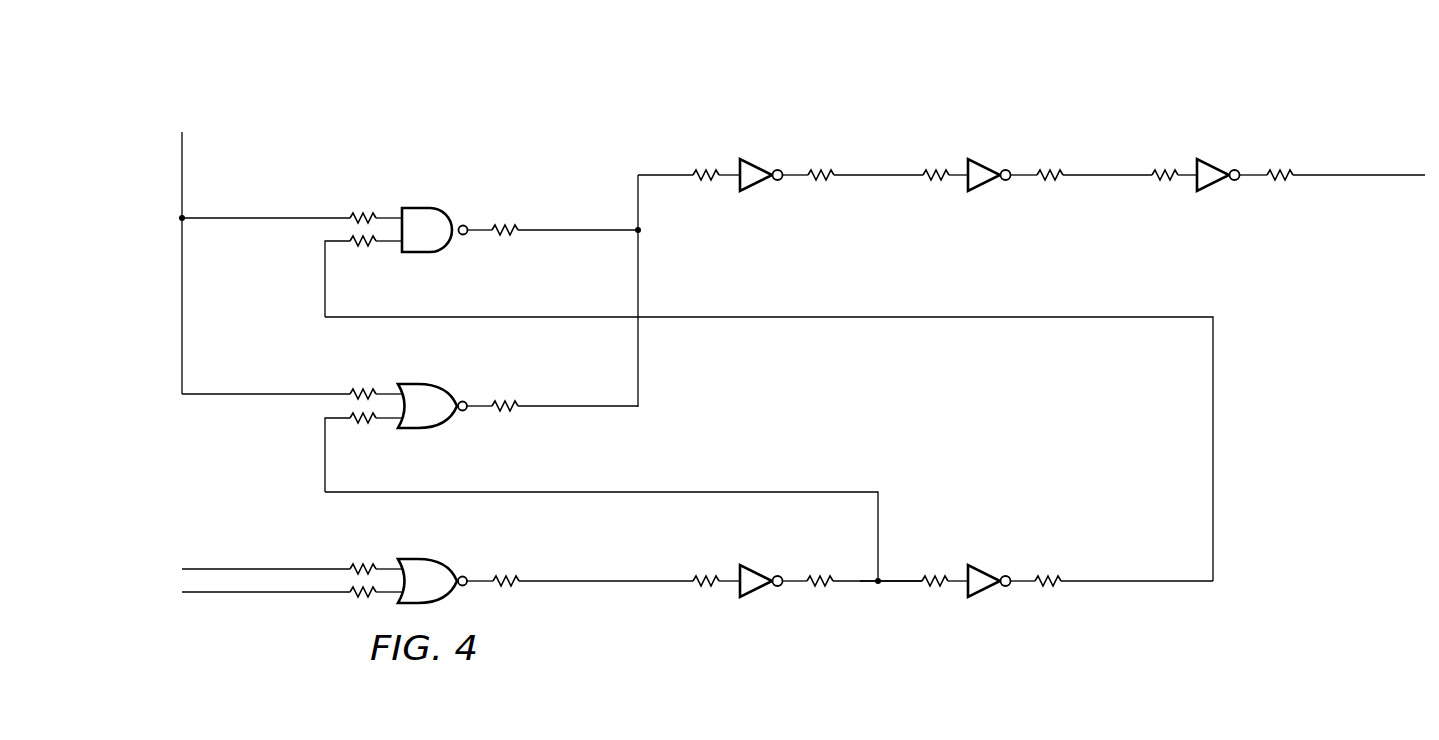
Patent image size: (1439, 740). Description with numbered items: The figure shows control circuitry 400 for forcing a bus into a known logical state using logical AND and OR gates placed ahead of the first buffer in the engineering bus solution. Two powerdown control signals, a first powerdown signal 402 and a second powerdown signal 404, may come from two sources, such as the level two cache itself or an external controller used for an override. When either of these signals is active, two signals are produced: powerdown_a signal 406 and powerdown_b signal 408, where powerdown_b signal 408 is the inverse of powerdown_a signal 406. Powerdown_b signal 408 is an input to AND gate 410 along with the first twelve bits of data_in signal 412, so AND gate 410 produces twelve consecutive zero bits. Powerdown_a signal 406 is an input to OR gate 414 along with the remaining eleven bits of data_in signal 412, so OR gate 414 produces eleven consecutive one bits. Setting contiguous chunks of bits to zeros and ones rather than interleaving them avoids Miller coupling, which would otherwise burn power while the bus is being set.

The control circuitry 400 is at (771, 338).
The powerdown_0 signal 402 is at (190, 569).
The powerdown_1 signal 404 is at (190, 592).
The powerdown_a signal 406 is at (897, 581).
The powerdown_b signal 408 is at (1160, 581).
The AND gate 410 is at (442, 208).
The data_in signal 412 is at (182, 166).
The OR gate 414 is at (440, 428).